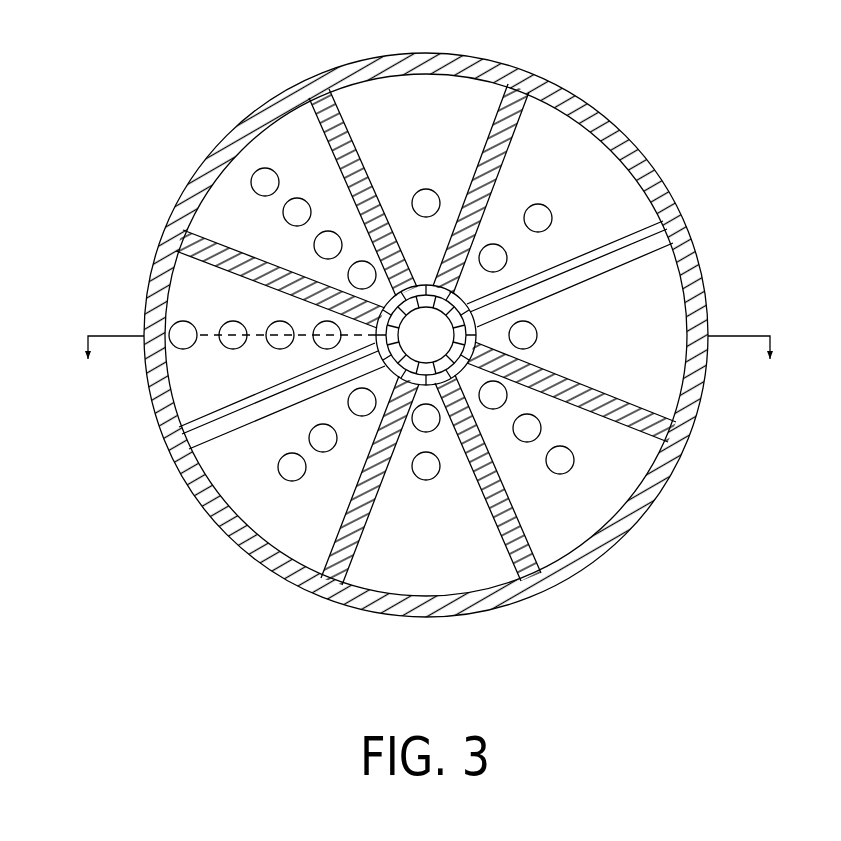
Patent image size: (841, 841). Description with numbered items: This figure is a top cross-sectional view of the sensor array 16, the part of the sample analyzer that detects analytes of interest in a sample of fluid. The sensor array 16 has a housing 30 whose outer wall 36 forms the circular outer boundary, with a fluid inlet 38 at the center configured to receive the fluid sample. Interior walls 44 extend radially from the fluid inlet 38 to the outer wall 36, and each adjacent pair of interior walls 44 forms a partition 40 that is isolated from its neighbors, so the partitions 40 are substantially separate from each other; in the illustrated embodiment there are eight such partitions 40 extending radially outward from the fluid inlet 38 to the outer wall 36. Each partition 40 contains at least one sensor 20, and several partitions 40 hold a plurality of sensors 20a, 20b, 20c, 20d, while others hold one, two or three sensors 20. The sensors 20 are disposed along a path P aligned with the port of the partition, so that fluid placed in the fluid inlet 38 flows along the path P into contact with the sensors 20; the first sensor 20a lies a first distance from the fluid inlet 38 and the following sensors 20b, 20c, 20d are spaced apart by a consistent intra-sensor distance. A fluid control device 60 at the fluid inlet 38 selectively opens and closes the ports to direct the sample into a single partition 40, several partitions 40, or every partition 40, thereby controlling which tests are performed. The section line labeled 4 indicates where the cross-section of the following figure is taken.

The sensor array 16 is at (118, 68).
The sensors 20 is at (303, 245).
The first sensor 20a is at (325, 350).
The second sensor 20b is at (280, 350).
The third sensor 20c is at (174, 322).
The fourth sensor 20d is at (230, 320).
The housing 30 is at (168, 222).
The outer wall 36 is at (532, 68).
The fluid inlet 38 is at (445, 343).
The partitions 40 is at (280, 133).
The interior walls 44 is at (352, 137).
The fluid control device 60 is at (463, 298).
The path P is at (187, 406).
The section line 4- 4 is at (428, 367).